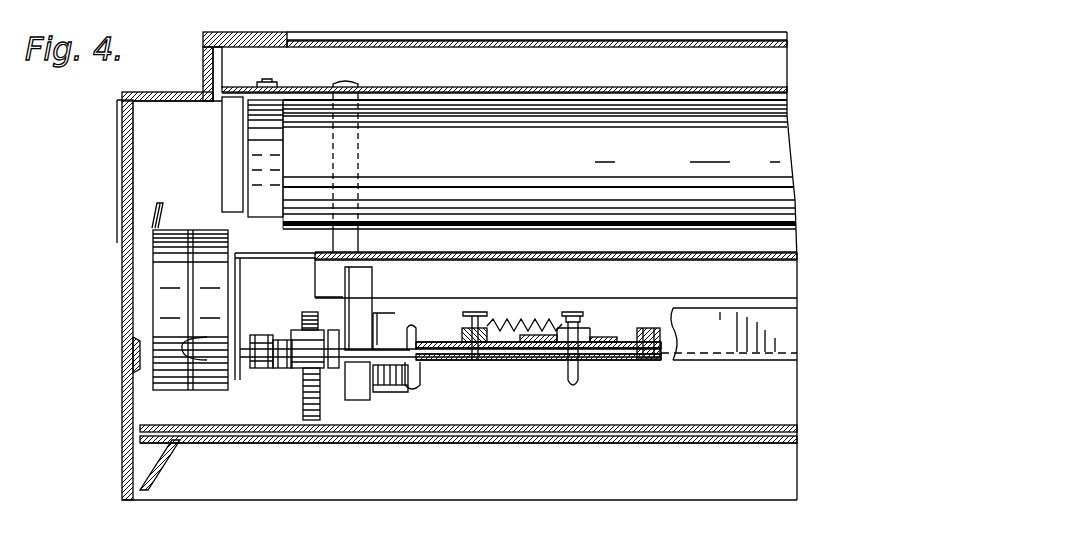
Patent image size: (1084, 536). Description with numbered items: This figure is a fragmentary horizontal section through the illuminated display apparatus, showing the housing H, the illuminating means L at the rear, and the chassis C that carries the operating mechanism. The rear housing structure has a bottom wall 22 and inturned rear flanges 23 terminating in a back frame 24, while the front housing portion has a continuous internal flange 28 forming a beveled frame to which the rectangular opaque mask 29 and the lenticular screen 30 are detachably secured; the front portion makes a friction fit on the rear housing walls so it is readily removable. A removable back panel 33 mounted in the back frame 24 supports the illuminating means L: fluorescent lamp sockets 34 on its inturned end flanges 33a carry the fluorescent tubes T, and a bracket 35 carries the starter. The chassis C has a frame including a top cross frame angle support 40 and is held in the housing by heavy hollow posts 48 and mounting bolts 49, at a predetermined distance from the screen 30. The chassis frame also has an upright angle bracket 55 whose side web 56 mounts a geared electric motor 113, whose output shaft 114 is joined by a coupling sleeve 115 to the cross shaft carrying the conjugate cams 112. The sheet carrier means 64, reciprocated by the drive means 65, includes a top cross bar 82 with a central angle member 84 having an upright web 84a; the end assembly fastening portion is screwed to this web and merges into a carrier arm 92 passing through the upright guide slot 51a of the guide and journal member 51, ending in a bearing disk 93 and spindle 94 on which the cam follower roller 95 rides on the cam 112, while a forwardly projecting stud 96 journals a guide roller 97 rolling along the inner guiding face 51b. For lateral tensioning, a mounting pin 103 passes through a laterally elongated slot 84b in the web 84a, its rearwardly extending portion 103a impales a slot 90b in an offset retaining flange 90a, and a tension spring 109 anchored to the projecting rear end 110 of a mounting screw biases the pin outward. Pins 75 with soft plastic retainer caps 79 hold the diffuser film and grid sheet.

The bottom wall 22 is at (176, 137).
The inturned rear flanges 23 is at (160, 92).
The back frame 24 is at (248, 32).
The continuous internal flange 28 is at (163, 468).
The rectangular opaque mask 29 is at (262, 438).
The lenticular screen 30 is at (505, 435).
The removable back panel 33 is at (481, 42).
The inturned end flanges 33a is at (238, 92).
The fluorescent lamp sockets 34 is at (232, 145).
The bracket 35 is at (500, 90).
The top cross frame angle support 40 is at (478, 252).
The hollow posts 48 is at (353, 233).
The mounting bolts 49 is at (352, 85).
The left hand upper guide and journal member 51 is at (355, 400).
The upright guide slot 51a is at (358, 348).
The inner guiding face 51b is at (373, 400).
The upright angle bracket 55 is at (273, 250).
The side web 56 is at (242, 272).
The sheet carrier means 64 is at (527, 372).
The drive means 65 is at (183, 223).
The pins 75 is at (413, 325).
The soft plastic retainer caps 79 is at (420, 383).
The top cross bar 82 is at (810, 321).
The central angle member 84 is at (773, 340).
The upright web 84a is at (665, 363).
The laterally elongated slot 84b is at (560, 360).
The offset retaining flange 90a is at (597, 342).
The slot 90b is at (595, 335).
The carrier arm 92 is at (360, 365).
The bearing disk 93 is at (334, 330).
The spindle 94 is at (283, 341).
The cam follower roller 95 is at (299, 330).
The forwardly projecting stud 96 is at (400, 392).
The guide roller 97 is at (370, 385).
The mounting pin 103 is at (572, 386).
The rearwardly extending portion 103a is at (575, 312).
The tension spring 109 is at (500, 322).
The projecting rear end 110 is at (478, 313).
The conjugate cams 112 is at (312, 421).
The geared electric motor 113 is at (165, 272).
The output shaft 114 is at (240, 388).
The coupling sleeve 115 is at (263, 368).
The chassis C is at (811, 282).
The housing H is at (106, 208).
The illuminating means L is at (210, 174).
The fluorescent tubes T is at (560, 162).